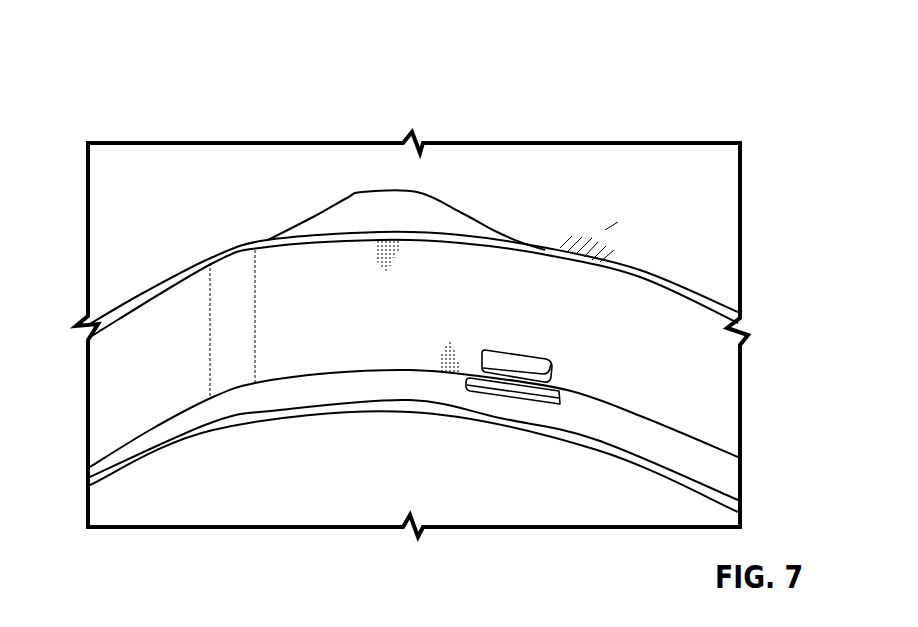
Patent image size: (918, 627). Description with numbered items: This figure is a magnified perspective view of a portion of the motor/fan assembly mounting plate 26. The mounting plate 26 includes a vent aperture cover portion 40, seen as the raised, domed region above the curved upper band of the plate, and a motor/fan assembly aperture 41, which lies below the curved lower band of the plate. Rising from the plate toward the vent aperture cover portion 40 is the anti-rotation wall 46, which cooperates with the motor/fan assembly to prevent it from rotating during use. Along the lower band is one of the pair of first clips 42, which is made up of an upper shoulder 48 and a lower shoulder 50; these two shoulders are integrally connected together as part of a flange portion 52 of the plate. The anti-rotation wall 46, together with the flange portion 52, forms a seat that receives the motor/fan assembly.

The motor/fan assembly mounting plate 26 is at (233, 83).
The vent aperture cover portion 40 is at (522, 205).
The motor/fan assembly aperture 41 is at (212, 473).
The first clips 42 is at (622, 224).
The anti-rotation wall 46 is at (140, 295).
The upper shoulders 48 is at (528, 363).
The lower shoulders 50 is at (530, 408).
The flange portion 52 is at (283, 395).